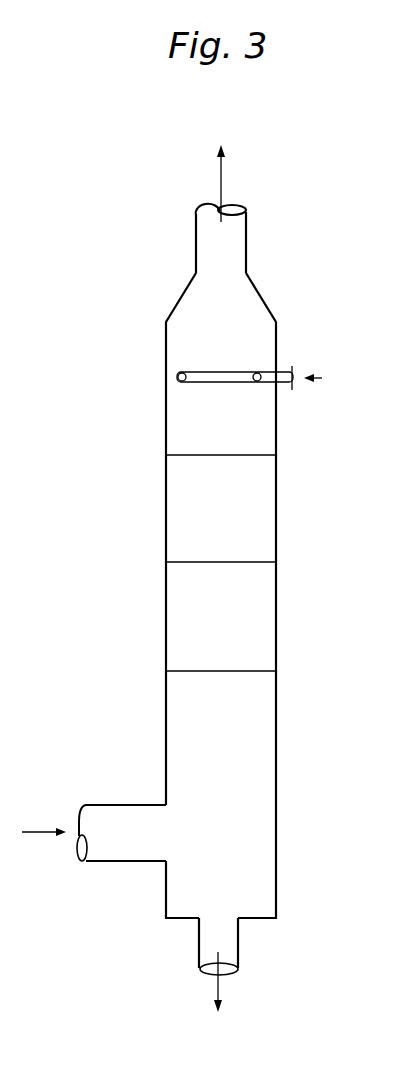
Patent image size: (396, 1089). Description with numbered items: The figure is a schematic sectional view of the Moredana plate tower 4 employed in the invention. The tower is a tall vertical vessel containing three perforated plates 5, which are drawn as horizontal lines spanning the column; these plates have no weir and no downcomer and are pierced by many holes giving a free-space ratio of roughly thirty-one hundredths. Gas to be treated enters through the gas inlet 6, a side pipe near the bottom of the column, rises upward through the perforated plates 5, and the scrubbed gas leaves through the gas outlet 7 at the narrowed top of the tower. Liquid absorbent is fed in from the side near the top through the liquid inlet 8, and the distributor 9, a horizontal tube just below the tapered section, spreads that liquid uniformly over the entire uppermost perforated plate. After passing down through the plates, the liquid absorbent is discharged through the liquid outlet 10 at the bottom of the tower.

The Moredana plate tower 4 is at (265, 312).
The perforated plate 5 is at (288, 671).
The gas inlet 6 is at (104, 851).
The gas outlet 7 is at (237, 229).
The liquid inlet 8 is at (282, 368).
The distributor 9 is at (194, 365).
The liquid outlet 10 is at (232, 943).